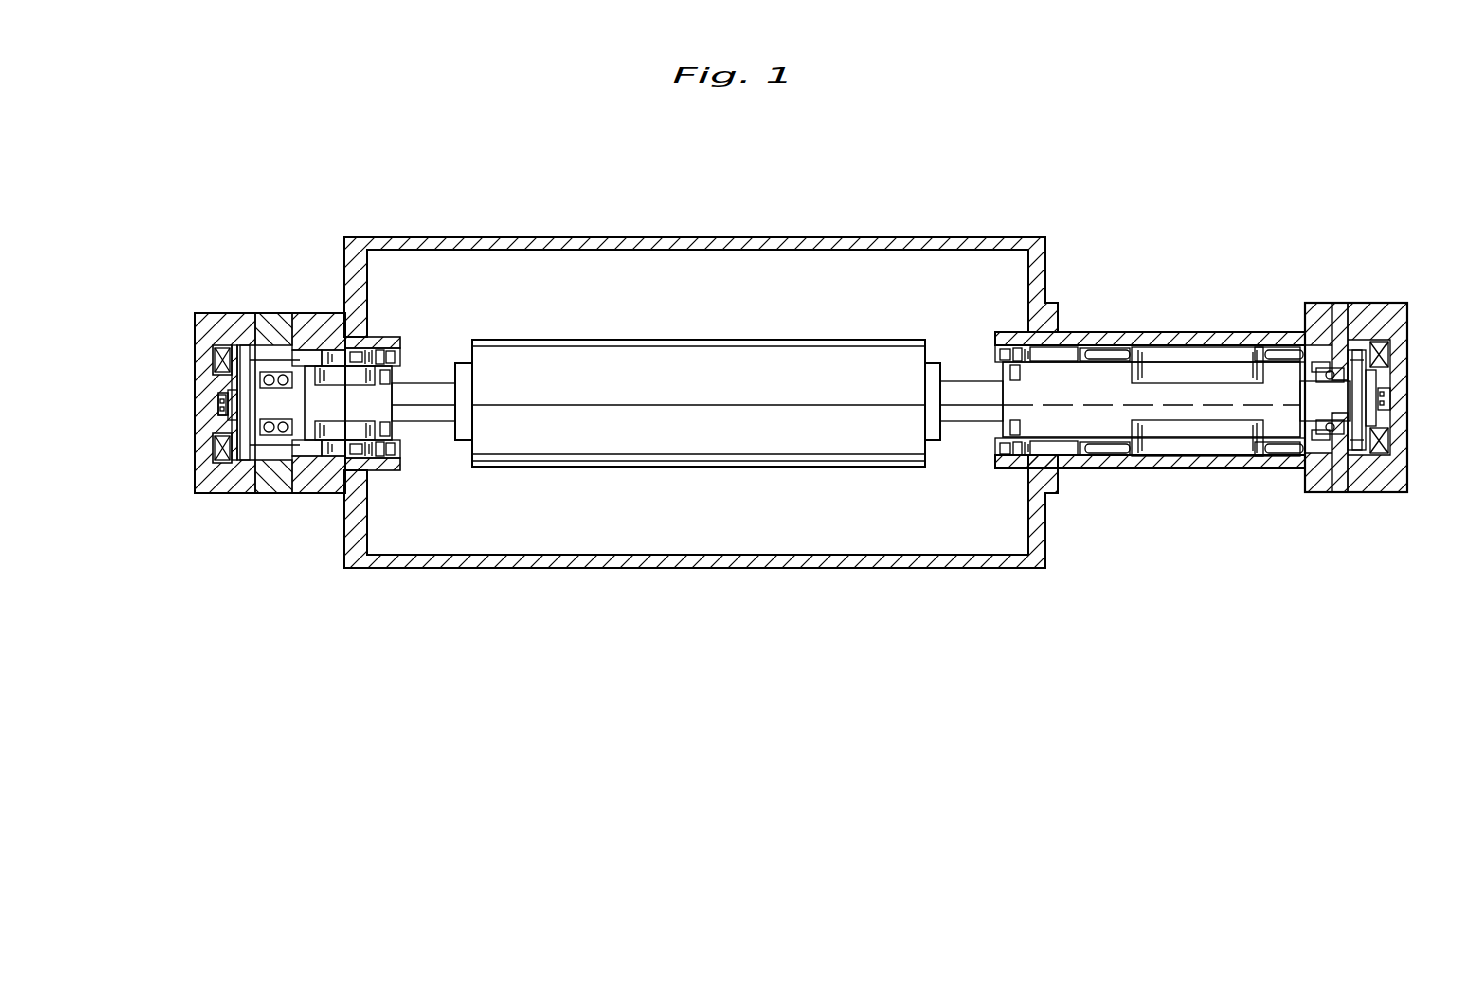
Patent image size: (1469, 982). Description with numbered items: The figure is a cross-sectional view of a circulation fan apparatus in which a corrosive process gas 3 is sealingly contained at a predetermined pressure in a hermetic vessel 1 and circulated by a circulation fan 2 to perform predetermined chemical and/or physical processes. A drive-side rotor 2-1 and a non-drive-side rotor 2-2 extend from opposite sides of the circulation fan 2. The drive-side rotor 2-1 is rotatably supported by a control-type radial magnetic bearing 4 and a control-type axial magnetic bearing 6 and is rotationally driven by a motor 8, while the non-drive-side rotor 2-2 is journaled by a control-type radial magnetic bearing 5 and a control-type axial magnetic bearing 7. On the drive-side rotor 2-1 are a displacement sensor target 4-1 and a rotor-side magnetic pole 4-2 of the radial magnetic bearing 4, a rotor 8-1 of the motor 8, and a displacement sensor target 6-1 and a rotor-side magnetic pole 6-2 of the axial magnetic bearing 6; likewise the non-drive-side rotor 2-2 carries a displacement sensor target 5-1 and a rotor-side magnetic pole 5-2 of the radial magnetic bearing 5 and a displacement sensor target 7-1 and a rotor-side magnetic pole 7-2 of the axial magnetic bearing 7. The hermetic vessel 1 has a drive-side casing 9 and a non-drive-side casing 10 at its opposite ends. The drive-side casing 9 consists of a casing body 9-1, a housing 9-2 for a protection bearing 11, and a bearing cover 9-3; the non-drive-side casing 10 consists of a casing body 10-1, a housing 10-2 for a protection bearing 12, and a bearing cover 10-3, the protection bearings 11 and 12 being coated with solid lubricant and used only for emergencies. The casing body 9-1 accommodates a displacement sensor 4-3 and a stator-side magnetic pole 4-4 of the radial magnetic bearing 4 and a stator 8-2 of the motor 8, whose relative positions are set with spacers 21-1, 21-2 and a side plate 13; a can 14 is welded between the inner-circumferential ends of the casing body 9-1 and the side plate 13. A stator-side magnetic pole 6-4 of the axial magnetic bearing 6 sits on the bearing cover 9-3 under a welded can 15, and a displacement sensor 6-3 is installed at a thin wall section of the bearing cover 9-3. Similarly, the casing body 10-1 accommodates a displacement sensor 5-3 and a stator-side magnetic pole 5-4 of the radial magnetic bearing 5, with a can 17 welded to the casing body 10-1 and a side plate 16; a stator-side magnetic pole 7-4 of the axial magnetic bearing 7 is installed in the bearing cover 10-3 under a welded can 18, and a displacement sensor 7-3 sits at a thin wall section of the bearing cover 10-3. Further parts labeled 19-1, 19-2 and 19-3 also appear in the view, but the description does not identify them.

The hermetic vessel 1 is at (701, 399).
The circulation fan 2 is at (672, 390).
The drive-side rotor 2-1 is at (945, 381).
The non-drive-side rotor 2-2 is at (423, 385).
The process gas 3 is at (720, 547).
The radial magnetic bearing 4 is at (1119, 399).
The displacement sensor target 4-1 is at (1003, 412).
The rotor-side magnetic pole 4-2 is at (1060, 460).
The displacement sensor 4-3 is at (1008, 440).
The stator-side magnetic pole 4-4 is at (1060, 350).
The radial magnetic bearing 5 is at (375, 478).
The displacement sensor target 5-1 is at (380, 440).
The rotor-side magnetic pole 5-2 is at (340, 432).
The displacement sensor 5-3 is at (360, 458).
The stator-side magnetic pole 5-4 is at (320, 470).
The axial magnetic bearing 6 is at (1405, 439).
The displacement sensor target 6-1 is at (1405, 458).
The rotor-side magnetic pole 6-2 is at (1360, 455).
The displacement sensor 6-3 is at (1395, 393).
The stator-side magnetic pole 6-4 is at (1393, 352).
The axial magnetic bearing 7 is at (199, 424).
The displacement sensor target 7-1 is at (232, 445).
The rotor-side magnetic pole 7-2 is at (248, 468).
The displacement sensor 7-3 is at (218, 405).
The stator-side magnetic pole 7-4 is at (218, 350).
The motor 8 is at (1150, 385).
The rotor 8-1 is at (1185, 432).
The stator 8-2 is at (1230, 345).
The drive-side casing 9 is at (1323, 412).
The casing body 9-1 is at (1135, 470).
The housing 9-2 is at (1337, 303).
The bearing cover 9-3 is at (1393, 303).
The non-drive-side casing 10 is at (260, 440).
The casing body 10-1 is at (293, 313).
The housing 10-2 is at (290, 493).
The bearing cover 10-3 is at (228, 313).
The protection bearing 11 is at (1325, 480).
The protection bearing 12 is at (270, 432).
The side plate 13 is at (1322, 470).
The can 14 is at (1242, 470).
The can 15 is at (1360, 350).
The side plate 16 is at (295, 348).
The can 17 is at (320, 350).
The can 18 is at (258, 348).
The seal 19-1 is at (1007, 347).
The seal ring 19-2 is at (1020, 347).
The bearing 19-3 is at (1100, 350).
The spacer 21-1 is at (375, 350).
The spacer 21-2 is at (390, 345).